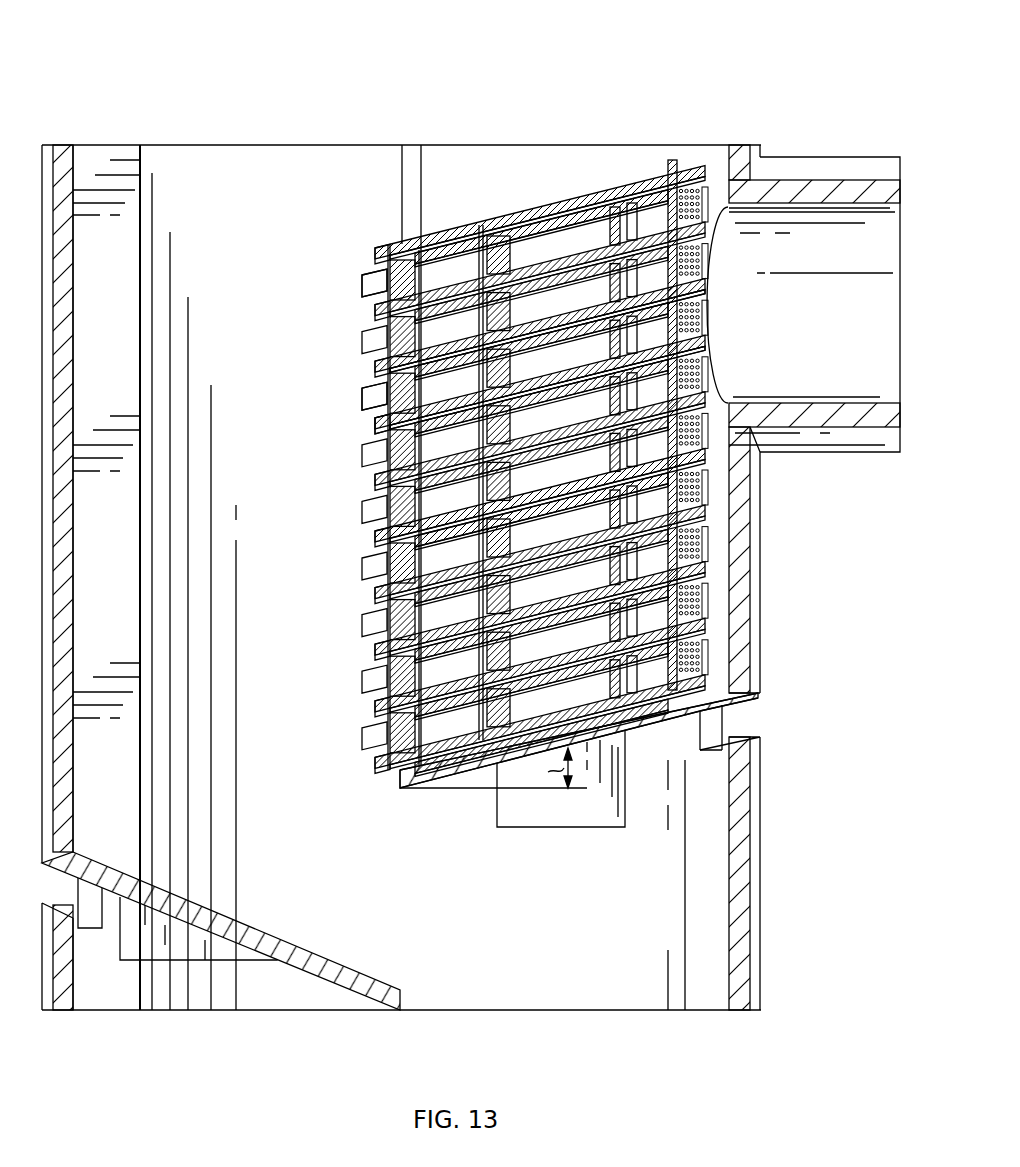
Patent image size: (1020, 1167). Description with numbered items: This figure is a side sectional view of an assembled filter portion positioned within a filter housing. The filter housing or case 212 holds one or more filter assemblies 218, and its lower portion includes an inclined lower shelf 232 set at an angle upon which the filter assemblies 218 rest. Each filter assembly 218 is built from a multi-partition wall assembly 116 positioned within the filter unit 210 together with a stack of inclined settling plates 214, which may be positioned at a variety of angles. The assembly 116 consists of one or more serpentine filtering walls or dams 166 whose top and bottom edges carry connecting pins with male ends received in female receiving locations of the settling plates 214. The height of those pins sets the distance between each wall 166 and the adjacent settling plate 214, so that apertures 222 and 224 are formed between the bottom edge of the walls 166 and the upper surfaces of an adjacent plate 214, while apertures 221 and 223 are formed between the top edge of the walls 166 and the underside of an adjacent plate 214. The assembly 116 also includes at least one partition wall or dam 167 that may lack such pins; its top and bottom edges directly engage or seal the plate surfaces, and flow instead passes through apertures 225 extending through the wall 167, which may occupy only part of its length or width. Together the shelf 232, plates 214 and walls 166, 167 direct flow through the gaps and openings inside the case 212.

The filter unit 210 is at (63, 130).
The filter housing or case 212 is at (60, 620).
The inclined settling plate 214 is at (390, 240).
The filtering wall or dam 166 is at (500, 216).
The partition wall or dam 167 is at (692, 178).
The multi-partition wall assembly 116 is at (353, 288).
The filter assembly 218 is at (278, 250).
The aperture 221 is at (373, 383).
The aperture 222 is at (363, 420).
The aperture 223 is at (377, 372).
The aperture 224 is at (377, 423).
The aperture 225 is at (728, 208).
The inclined lower shelf 232 is at (666, 705).